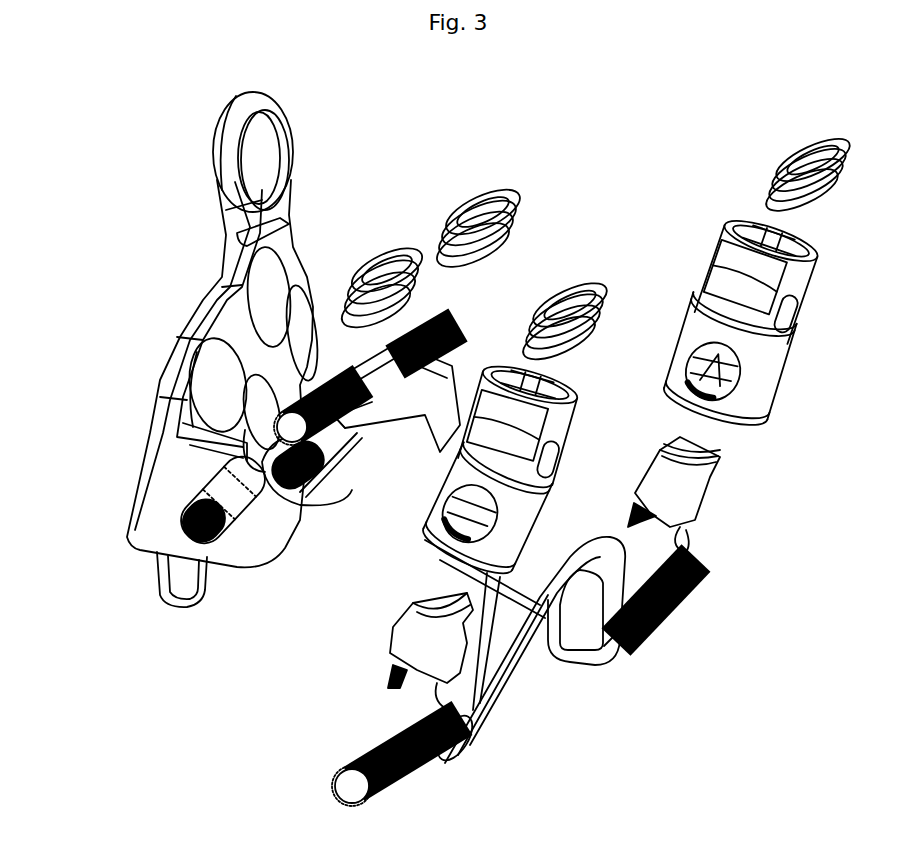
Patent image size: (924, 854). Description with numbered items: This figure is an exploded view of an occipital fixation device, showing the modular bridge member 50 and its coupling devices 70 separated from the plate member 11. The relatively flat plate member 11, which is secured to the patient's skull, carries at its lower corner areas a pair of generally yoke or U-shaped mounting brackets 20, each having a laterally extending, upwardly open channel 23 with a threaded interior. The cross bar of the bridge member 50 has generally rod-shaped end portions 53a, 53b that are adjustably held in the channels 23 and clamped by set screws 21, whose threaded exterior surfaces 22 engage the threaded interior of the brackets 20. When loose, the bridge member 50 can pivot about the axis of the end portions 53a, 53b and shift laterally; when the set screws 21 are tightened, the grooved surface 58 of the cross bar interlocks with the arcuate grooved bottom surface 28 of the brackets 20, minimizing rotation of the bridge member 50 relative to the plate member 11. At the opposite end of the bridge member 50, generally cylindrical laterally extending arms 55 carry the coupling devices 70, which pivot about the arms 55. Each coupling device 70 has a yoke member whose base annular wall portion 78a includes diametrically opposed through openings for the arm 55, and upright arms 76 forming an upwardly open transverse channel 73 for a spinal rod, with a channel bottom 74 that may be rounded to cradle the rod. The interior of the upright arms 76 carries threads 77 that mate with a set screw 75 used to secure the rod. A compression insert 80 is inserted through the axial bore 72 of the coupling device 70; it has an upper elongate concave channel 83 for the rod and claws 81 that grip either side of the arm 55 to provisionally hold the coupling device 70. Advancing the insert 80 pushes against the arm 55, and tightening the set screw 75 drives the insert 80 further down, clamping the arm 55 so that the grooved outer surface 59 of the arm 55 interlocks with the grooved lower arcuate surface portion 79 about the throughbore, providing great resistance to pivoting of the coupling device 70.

The plate member 11 is at (180, 350).
The mounting bracket 20 is at (332, 503).
The set screw 21 is at (451, 235).
The threaded exterior surface 22 is at (350, 268).
The channel 23 is at (200, 498).
The grooved surface 28 is at (187, 537).
The bridge member 50 is at (469, 521).
The cross bar end portion 53a is at (322, 382).
The cross bar end portion 53b is at (448, 317).
The laterally extending arm 55 is at (672, 613).
The grooved surface 58 is at (457, 348).
The grooved outer surface 59 is at (607, 655).
The coupling device 70 is at (768, 283).
The axial bore 72 is at (813, 222).
The channel 73 is at (813, 290).
The channel bottom 74 is at (795, 340).
The set screw 75 is at (565, 287).
The upright arm 76 is at (820, 255).
The threads 77 is at (763, 240).
The annular wall portion 78a is at (480, 547).
The grooved lower arcuate surface portion 79 is at (685, 362).
The compression insert 80 is at (557, 527).
The claw 81 is at (635, 507).
The upper elongate concave channel 83 is at (680, 450).